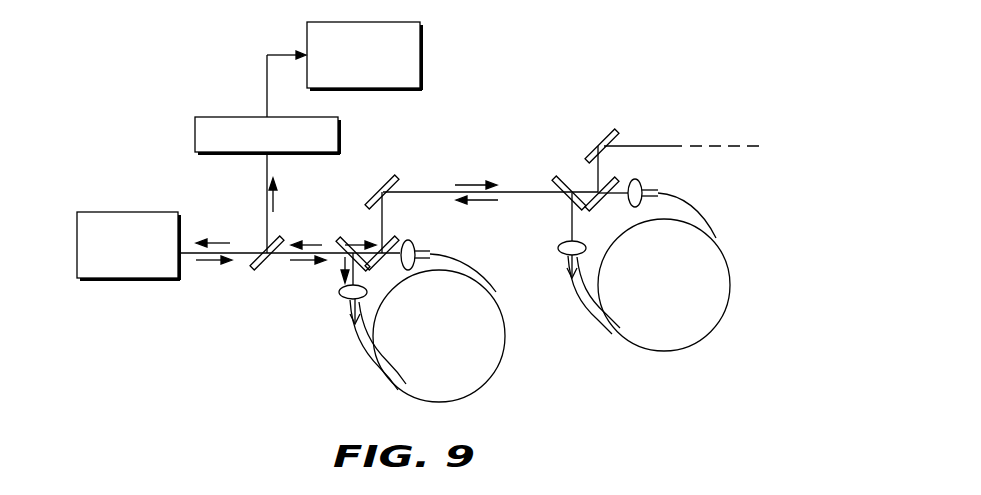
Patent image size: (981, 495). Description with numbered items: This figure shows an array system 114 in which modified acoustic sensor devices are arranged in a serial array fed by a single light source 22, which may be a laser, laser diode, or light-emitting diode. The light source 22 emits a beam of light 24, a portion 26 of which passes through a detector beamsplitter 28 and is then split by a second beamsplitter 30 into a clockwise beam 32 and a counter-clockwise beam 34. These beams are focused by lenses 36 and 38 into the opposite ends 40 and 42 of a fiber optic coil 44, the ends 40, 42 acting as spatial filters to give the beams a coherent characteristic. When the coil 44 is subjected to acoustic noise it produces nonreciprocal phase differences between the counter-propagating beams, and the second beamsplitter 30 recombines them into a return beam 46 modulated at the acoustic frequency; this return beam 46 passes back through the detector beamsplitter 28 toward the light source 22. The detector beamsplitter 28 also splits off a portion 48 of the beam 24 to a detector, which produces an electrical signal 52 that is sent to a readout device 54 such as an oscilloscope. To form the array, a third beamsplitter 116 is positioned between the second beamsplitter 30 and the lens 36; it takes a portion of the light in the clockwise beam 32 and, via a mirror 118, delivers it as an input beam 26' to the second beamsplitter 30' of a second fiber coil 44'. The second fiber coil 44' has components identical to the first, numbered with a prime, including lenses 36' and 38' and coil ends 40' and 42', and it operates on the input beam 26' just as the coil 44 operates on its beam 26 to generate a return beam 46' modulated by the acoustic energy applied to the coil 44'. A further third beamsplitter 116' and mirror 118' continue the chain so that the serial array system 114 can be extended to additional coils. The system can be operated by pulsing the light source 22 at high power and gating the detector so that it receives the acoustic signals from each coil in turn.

The light source 22 is at (148, 212).
The beam of light 24 is at (200, 261).
The portion of beam 26 is at (303, 283).
The detector beamsplitter 28 is at (256, 266).
The second beamsplitter 30 is at (342, 232).
The clockwise beam 32 is at (360, 245).
The counter-clockwise beam 34 is at (341, 294).
The lens 36 is at (430, 242).
The lens 38 is at (358, 344).
The end of fiber optic coil 40 is at (455, 263).
The end of fiber optic coil 42 is at (369, 349).
The fiber optic coil 44 is at (460, 336).
The return beam 46 is at (259, 229).
The portion of beam 48 is at (276, 196).
The electrical signal 52 is at (270, 53).
The readout device 54 is at (424, 52).
The array system 114 is at (495, 126).
The third beamsplitter 116 is at (389, 266).
The mirror 118 is at (377, 172).
The input beam 26' is at (471, 171).
The return beam 46' is at (497, 219).
The second beamsplitter 30' is at (557, 180).
The third beamsplitter 116' is at (604, 210).
The mirror 118' is at (623, 131).
The lens 36' is at (665, 181).
The end of fiber optic coil 40' is at (686, 206).
The lens 38' is at (565, 287).
The end of fiber optic coil 42' is at (581, 295).
The second fiber coil 44' is at (664, 305).